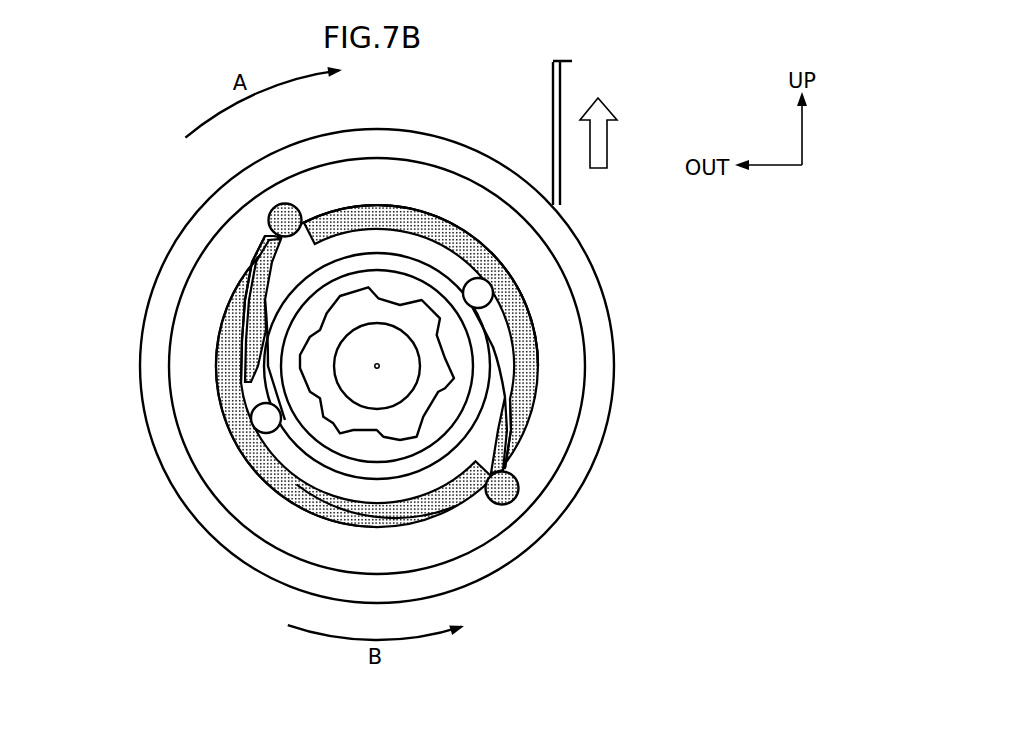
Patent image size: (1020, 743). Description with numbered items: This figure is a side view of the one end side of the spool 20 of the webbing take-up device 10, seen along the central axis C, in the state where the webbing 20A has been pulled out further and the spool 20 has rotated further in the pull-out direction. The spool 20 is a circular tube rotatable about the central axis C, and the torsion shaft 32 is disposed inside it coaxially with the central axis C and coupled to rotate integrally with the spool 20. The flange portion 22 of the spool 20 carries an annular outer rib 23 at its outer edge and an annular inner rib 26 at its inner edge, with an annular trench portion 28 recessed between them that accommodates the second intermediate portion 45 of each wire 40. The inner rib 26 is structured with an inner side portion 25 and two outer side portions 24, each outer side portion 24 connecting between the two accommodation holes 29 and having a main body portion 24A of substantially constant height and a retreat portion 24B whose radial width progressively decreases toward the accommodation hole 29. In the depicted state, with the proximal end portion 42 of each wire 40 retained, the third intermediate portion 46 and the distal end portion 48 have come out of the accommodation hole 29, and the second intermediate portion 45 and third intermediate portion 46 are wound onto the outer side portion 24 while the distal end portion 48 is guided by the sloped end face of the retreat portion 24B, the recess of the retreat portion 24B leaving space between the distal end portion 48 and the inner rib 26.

The webbing take-up device 10 is at (185, 61).
The spool 20 is at (610, 289).
The webbing 20A is at (552, 64).
The flange portion 22 is at (522, 572).
The outer rib 23 is at (600, 396).
The outer side portion 24 is at (405, 112).
The main body portion 24A is at (328, 246).
The retreat portion 24B is at (243, 322).
The inner side portion 25 is at (318, 476).
The inner rib 26 is at (382, 368).
The trench portion 28 is at (562, 332).
The accommodation hole 29 is at (490, 292).
The torsion shaft 32 is at (425, 312).
The wire 40 is at (449, 212).
The proximal end portion 42 is at (280, 214).
The second intermediate portion 45 is at (232, 276).
The third intermediate portion 46 is at (522, 262).
The distal end portion 48 is at (216, 360).
The central axis C is at (377, 370).